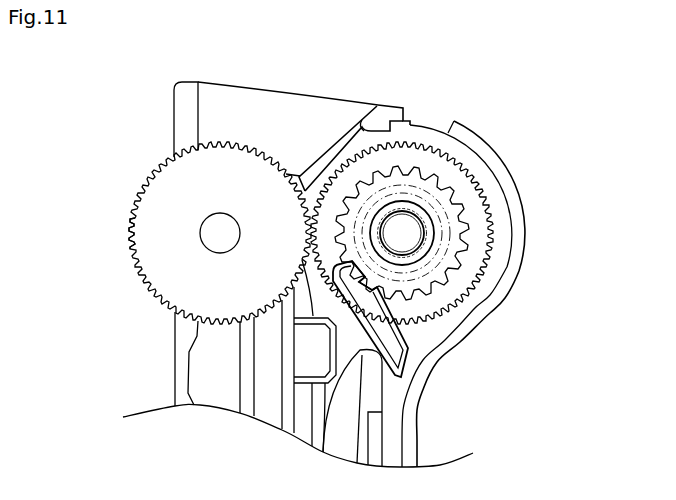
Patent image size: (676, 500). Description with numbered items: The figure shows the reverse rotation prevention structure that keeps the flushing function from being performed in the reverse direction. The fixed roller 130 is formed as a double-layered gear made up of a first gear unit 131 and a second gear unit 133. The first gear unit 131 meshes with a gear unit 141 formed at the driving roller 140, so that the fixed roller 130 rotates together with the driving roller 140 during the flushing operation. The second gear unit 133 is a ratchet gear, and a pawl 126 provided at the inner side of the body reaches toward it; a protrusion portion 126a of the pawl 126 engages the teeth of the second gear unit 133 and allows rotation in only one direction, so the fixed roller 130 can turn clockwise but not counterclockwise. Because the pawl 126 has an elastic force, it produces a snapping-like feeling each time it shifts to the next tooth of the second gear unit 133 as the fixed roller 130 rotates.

The fixed roller 130 is at (437, 202).
The first gear unit 131 is at (473, 173).
The second gear unit 133 is at (463, 204).
The driving roller 140 is at (133, 285).
The gear unit 141 is at (132, 256).
The pawl 126 is at (441, 330).
The protrusion portion 126a is at (378, 287).